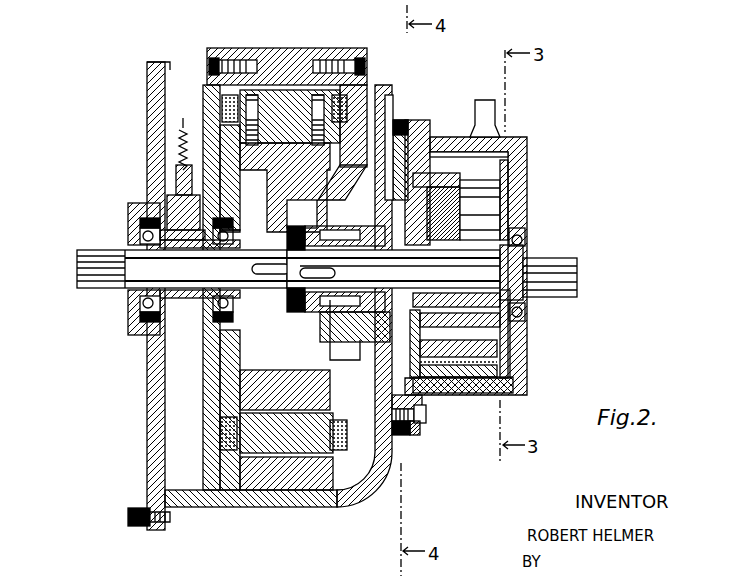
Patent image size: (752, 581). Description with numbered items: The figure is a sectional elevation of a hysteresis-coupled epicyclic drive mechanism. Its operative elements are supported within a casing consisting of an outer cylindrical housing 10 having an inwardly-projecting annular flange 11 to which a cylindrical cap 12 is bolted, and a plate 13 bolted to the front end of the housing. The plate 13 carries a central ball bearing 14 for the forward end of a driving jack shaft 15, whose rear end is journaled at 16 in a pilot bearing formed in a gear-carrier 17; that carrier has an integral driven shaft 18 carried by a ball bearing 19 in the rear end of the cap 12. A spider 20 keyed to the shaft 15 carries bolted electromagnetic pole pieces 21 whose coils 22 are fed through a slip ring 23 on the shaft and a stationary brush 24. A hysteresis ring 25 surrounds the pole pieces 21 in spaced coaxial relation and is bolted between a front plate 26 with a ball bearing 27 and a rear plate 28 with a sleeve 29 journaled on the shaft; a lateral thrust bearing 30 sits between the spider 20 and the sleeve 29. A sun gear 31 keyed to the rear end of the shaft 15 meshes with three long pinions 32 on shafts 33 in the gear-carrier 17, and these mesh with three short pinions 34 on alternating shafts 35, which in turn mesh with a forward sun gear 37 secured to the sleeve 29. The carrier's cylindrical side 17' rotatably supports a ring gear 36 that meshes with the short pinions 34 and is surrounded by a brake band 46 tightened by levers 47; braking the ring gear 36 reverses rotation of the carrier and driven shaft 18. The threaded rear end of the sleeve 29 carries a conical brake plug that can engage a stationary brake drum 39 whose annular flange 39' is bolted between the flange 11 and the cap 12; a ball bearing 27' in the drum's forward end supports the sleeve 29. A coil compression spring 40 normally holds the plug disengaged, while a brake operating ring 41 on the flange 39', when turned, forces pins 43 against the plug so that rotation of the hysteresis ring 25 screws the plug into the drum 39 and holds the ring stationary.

The outer cylindrical housing 10 is at (262, 502).
The inwardly-projecting annular flange 11 is at (383, 447).
The cylindrical cap 12 is at (527, 372).
The plate 13 is at (152, 383).
The ball bearing 14 is at (133, 307).
The driving jack shaft 15 is at (140, 265).
The pilot bearing journal 16 is at (520, 262).
The gear-carrier 17 is at (513, 200).
The cylindrical side 17' is at (457, 160).
The driven shaft 18 is at (565, 268).
The ball bearing 19 is at (525, 313).
The spider 20 is at (205, 404).
The electromagnetic pole pieces 21 is at (245, 460).
The coils 22 is at (370, 95).
The slip ring 23 is at (170, 200).
The stationary brush 24 is at (177, 172).
The hysteresis ring 25 is at (290, 58).
The front plate 26 is at (207, 99).
The ball bearing 27 is at (158, 218).
The ball bearing 27' is at (160, 332).
The rear plate 28 is at (398, 118).
The sleeve 29 is at (393, 269).
The lateral thrust bearing 30 is at (258, 260).
The sun gear 31 is at (520, 228).
The long pinions 32 is at (495, 350).
The shafts 33 is at (495, 325).
The short pinions 34 is at (437, 180).
The shafts 35 is at (505, 190).
The ring gear 36 is at (447, 398).
The forward sun gear 37 is at (470, 395).
The stationary brake drum 39 is at (411, 455).
The annular flange 39' is at (421, 469).
The coil compression spring 40 is at (347, 287).
The brake operating ring 41 is at (418, 432).
The pins 43 is at (403, 132).
The brake band 46 is at (482, 150).
The levers 47 is at (492, 112).